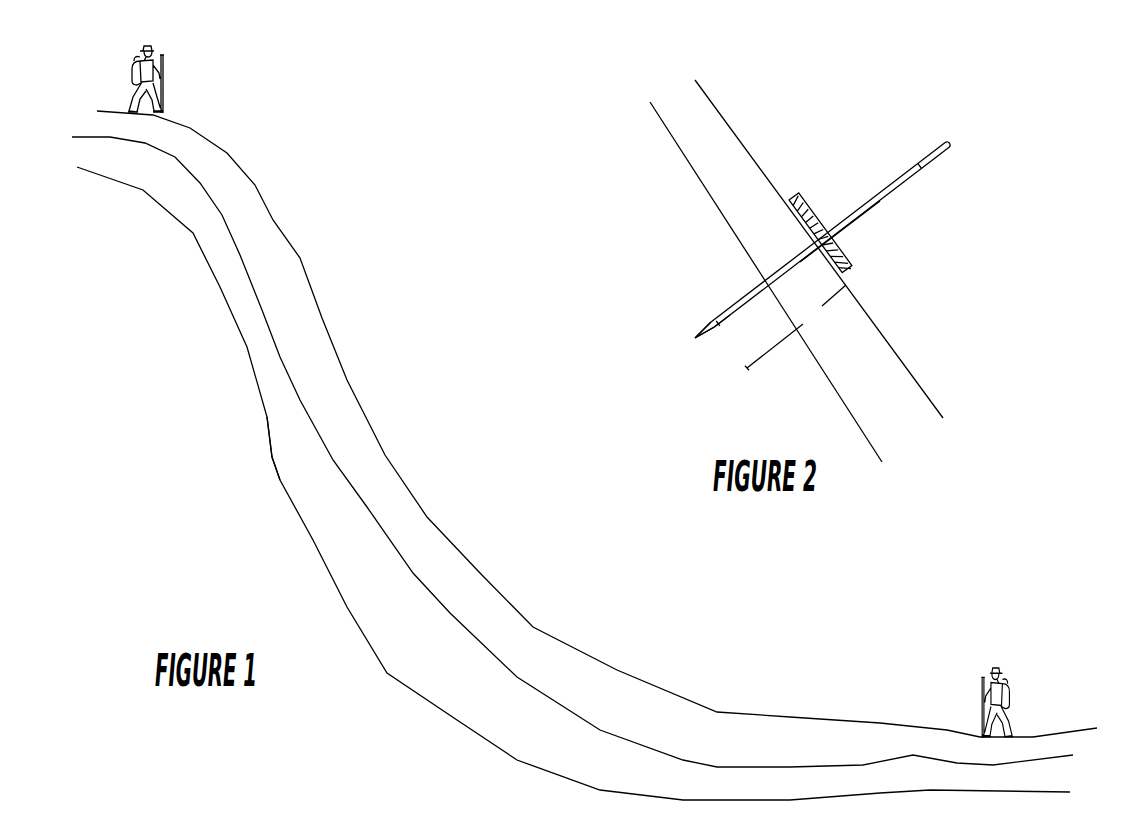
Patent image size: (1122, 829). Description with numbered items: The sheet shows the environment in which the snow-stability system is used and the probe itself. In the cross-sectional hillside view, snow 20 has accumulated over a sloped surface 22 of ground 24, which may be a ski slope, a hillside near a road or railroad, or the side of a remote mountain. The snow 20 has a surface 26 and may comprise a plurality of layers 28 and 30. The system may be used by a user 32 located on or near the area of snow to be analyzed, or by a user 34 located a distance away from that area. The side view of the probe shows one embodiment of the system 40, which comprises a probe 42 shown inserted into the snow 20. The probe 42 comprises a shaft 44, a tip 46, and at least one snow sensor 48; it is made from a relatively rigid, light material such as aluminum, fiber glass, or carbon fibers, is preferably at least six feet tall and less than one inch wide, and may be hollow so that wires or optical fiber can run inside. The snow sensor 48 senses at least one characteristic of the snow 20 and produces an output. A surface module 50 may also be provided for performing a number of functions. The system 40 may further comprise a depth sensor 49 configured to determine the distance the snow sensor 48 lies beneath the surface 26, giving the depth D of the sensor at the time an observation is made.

In FIG. 1, the snow 20 is at (328, 323).
In FIG. 2, the snow 20 is at (703, 78).
In FIG. 1, the sloped surface 22 is at (274, 459).
In FIG. 1, the ground 24 is at (204, 550).
In FIG. 1, the surface 26 is at (349, 383).
In FIG. 2, the surface 26 is at (738, 137).
In FIG. 1, the layer 28 is at (381, 527).
In FIG. 2, the layer 28 is at (714, 190).
In FIG. 1, the layer 30 is at (341, 572).
In FIG. 2, the layer 30 is at (677, 238).
In FIG. 1, the user 32 is at (122, 74).
In FIG. 1, the user 34 is at (1022, 686).
In FIG. 2, the system 40 is at (836, 126).
In FIG. 2, the probe 42 is at (878, 186).
In FIG. 2, the shaft 44 is at (855, 220).
In FIG. 2, the tip 46 is at (694, 338).
In FIG. 2, the snow sensor 48 is at (712, 334).
In FIG. 2, the depth sensor 49 is at (721, 324).
In FIG. 2, the surface module 50 is at (856, 264).
In FIG. 2, the depth D is at (795, 327).